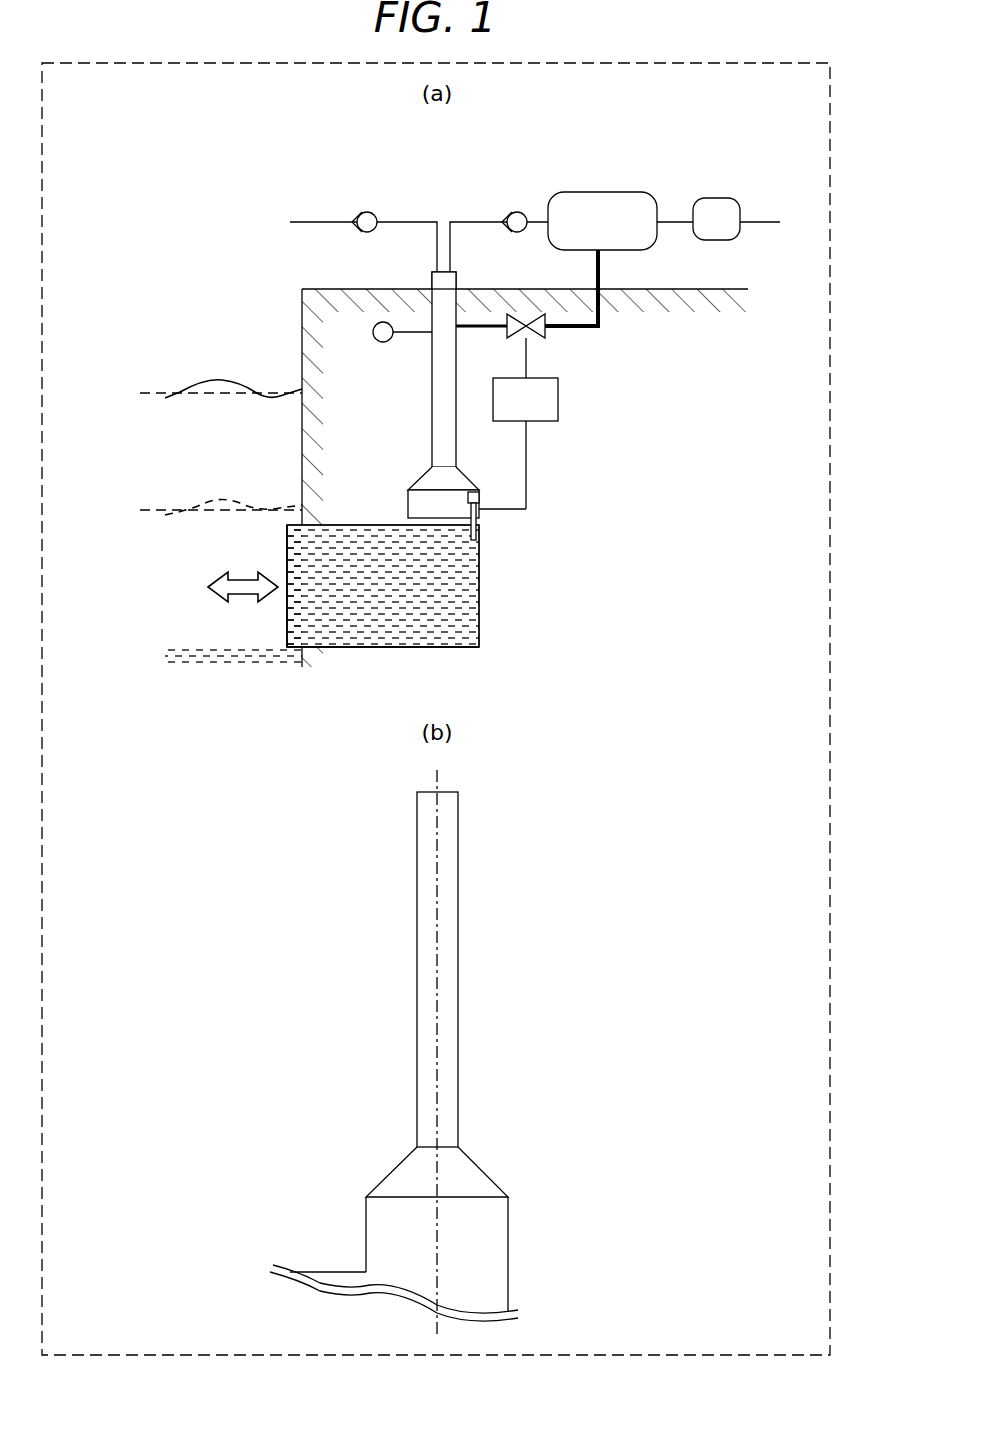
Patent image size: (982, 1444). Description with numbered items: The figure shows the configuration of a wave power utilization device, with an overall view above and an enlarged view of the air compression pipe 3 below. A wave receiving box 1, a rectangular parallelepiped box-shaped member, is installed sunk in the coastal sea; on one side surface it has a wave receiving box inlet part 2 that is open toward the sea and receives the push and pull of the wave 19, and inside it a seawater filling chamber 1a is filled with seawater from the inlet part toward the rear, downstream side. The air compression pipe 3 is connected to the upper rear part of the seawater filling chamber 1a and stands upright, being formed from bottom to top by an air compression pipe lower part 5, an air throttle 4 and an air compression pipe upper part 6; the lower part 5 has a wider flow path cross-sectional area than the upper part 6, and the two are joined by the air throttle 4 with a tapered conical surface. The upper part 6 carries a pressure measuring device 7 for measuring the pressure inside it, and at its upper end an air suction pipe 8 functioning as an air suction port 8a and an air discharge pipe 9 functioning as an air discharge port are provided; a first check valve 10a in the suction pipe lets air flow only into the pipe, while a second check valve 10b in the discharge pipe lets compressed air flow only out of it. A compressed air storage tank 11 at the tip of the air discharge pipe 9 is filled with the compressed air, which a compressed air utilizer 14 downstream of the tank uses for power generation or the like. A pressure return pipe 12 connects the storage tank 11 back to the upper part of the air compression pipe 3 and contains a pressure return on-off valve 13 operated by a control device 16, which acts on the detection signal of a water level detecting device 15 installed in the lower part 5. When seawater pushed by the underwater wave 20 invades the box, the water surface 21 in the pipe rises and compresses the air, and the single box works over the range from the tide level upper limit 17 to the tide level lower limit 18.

The wave receiving box 1 is at (400, 630).
The seawater filling chamber 1a is at (330, 648).
The wave receiving box inlet part 2 is at (287, 620).
The air compression pipe 3 is at (443, 803).
The air throttle 4 is at (442, 478).
The air compression pipe lower part 5 is at (424, 507).
The air compression pipe upper part 6 is at (445, 386).
The pressure measuring device 7 is at (378, 323).
The air suction pipe 8 is at (437, 220).
The air suction port 8a is at (432, 270).
The air discharge pipe 9 is at (455, 218).
The first check valve 10a is at (358, 216).
The second check valve 10b is at (512, 215).
The compressed air storage tank 11 is at (615, 215).
The pressure return pipe 12 is at (600, 316).
The pressure return on-off valve 13 is at (535, 332).
The compressed air utilizer 14 is at (715, 210).
The water level detecting device 15 is at (480, 497).
The control device 16 is at (540, 400).
The tide level upper limit 17 is at (150, 393).
The tide level lower limit 18 is at (152, 510).
The wave 19 is at (222, 500).
The wave (underwater) 20 is at (232, 586).
The water surface 21 is at (447, 522).